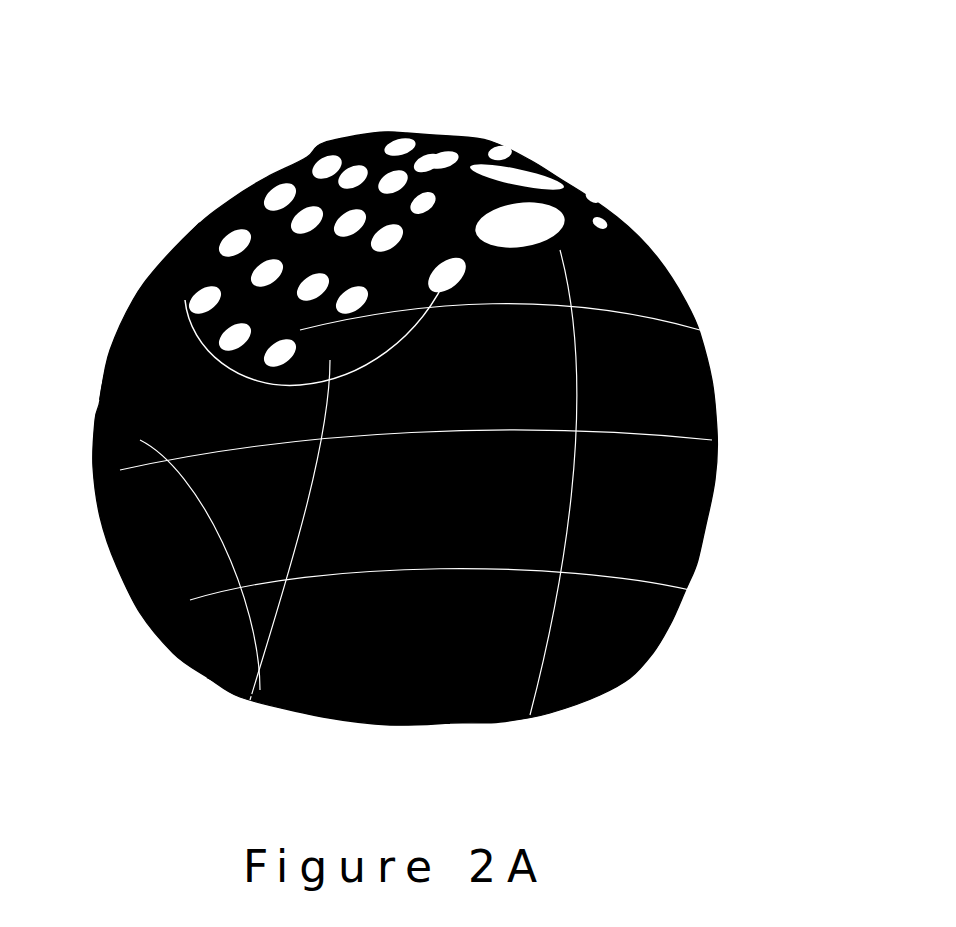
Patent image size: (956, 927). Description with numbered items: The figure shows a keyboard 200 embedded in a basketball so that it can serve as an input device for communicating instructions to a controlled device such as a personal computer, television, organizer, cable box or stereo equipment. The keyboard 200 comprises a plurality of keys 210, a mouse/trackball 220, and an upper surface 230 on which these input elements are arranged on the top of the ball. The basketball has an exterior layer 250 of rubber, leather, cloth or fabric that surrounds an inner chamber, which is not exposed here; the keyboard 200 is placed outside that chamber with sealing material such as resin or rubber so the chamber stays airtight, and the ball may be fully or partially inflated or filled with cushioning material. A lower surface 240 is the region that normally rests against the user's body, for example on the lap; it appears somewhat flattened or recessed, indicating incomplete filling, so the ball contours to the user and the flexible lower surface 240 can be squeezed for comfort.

The keyboard 200 is at (506, 138).
The keys 210 is at (400, 136).
The mouse/trackball 220 is at (615, 227).
The upper surface 230 is at (208, 212).
The lower surface 240 is at (253, 702).
The exterior layer 250 is at (713, 400).